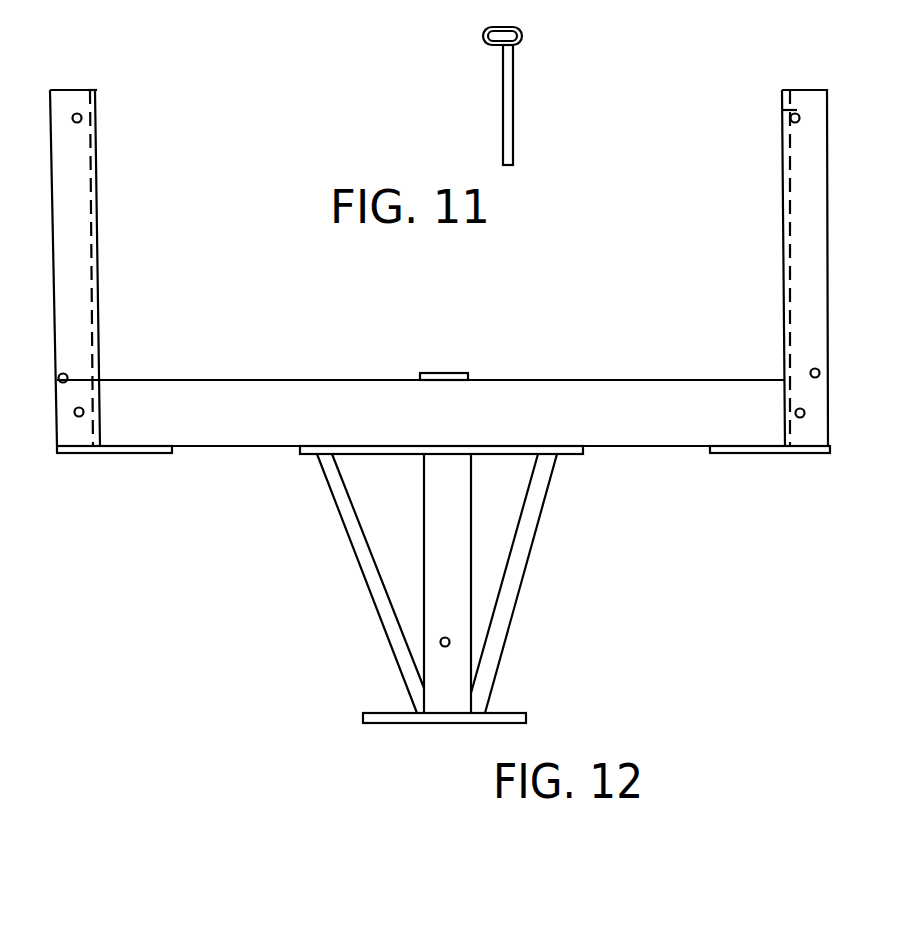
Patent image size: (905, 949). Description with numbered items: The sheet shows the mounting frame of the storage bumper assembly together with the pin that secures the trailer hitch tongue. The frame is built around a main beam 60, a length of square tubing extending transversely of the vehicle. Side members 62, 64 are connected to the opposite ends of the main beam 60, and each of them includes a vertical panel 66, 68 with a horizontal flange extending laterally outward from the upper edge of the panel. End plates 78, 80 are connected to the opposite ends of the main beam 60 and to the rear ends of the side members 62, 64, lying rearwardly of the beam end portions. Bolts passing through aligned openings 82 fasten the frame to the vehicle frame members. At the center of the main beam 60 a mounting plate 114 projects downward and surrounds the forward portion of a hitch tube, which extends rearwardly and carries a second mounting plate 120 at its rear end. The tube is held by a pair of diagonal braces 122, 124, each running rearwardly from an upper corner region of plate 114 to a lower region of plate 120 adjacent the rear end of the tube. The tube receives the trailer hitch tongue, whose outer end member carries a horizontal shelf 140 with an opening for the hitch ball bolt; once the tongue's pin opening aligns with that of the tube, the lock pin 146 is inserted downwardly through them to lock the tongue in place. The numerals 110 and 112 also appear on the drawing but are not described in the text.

In FIG. 11, the main beam 60 is at (352, 400).
In FIG. 11, the side member 62 is at (110, 193).
In FIG. 11, the side member 64 is at (766, 213).
In FIG. 11, the vertical panel 66 is at (133, 270).
In FIG. 11, the vertical panel 68 is at (782, 272).
In FIG. 11, the end plate 78 is at (141, 453).
In FIG. 11, the end plate 80 is at (727, 453).
In FIG. 11, the openings 82 is at (82, 118).
In FIG. 11, the support column 110 is at (782, 118).
In FIG. 12, the support column 110 is at (390, 454).
In FIG. 11, the left post top 112 is at (97, 90).
In FIG. 12, the mounting plate 114 is at (523, 453).
In FIG. 12, the mounting plate 120 is at (507, 712).
In FIG. 12, the diagonal brace 122 is at (382, 625).
In FIG. 12, the diagonal brace 124 is at (510, 605).
In FIG. 12, the horizontal shelf 140 is at (450, 645).
In FIG. 11, the lock pin 146 is at (540, 116).